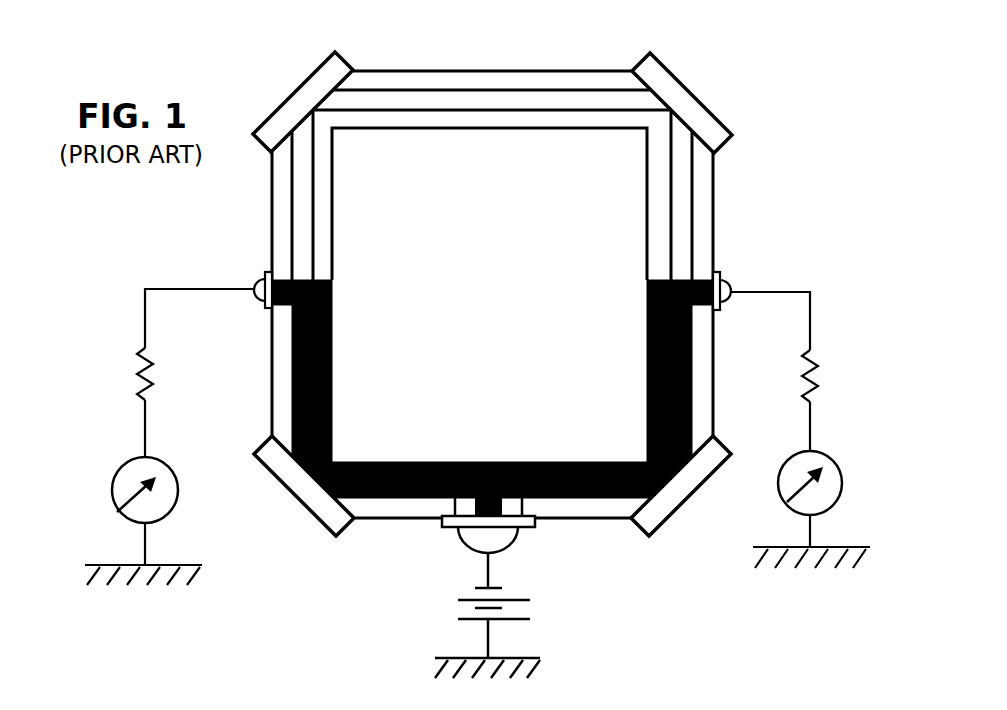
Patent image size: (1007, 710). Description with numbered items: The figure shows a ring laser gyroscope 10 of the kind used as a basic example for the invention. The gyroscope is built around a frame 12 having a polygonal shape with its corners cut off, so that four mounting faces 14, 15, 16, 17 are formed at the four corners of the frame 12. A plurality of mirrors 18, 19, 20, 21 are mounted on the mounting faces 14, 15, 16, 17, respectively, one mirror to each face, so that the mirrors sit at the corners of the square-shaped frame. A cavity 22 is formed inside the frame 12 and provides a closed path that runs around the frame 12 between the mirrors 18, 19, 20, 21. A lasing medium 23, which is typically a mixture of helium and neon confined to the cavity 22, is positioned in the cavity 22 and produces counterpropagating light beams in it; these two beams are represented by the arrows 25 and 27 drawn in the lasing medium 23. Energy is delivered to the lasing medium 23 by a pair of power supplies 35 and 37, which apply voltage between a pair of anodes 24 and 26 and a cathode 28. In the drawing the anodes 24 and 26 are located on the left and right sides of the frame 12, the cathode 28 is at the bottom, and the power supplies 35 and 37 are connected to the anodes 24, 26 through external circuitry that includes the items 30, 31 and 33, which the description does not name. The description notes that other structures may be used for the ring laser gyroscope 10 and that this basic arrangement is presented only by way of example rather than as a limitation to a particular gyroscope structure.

The ring laser gyroscope 10 is at (140, 233).
The frame 12 is at (715, 203).
The mounting face 14 is at (292, 501).
The mounting face 15 is at (690, 517).
The mounting face 16 is at (691, 91).
The mounting face 17 is at (290, 90).
The mirror 18 is at (274, 474).
The mirror 19 is at (703, 489).
The mirror 20 is at (678, 80).
The mirror 21 is at (311, 72).
The cavity 22 is at (290, 213).
The lasing medium 23 is at (492, 389).
The anode 24 is at (266, 274).
The arrow representing counterpropagating light beam 25 is at (422, 460).
The anode 26 is at (723, 278).
The arrow representing counterpropagating light beam 27 is at (558, 460).
The cathode 28 is at (508, 548).
The voltage source 30 is at (437, 620).
The ballast resistor 31 is at (148, 365).
The ballast resistor 33 is at (802, 380).
The power supply 35 is at (172, 471).
The power supply 37 is at (792, 453).